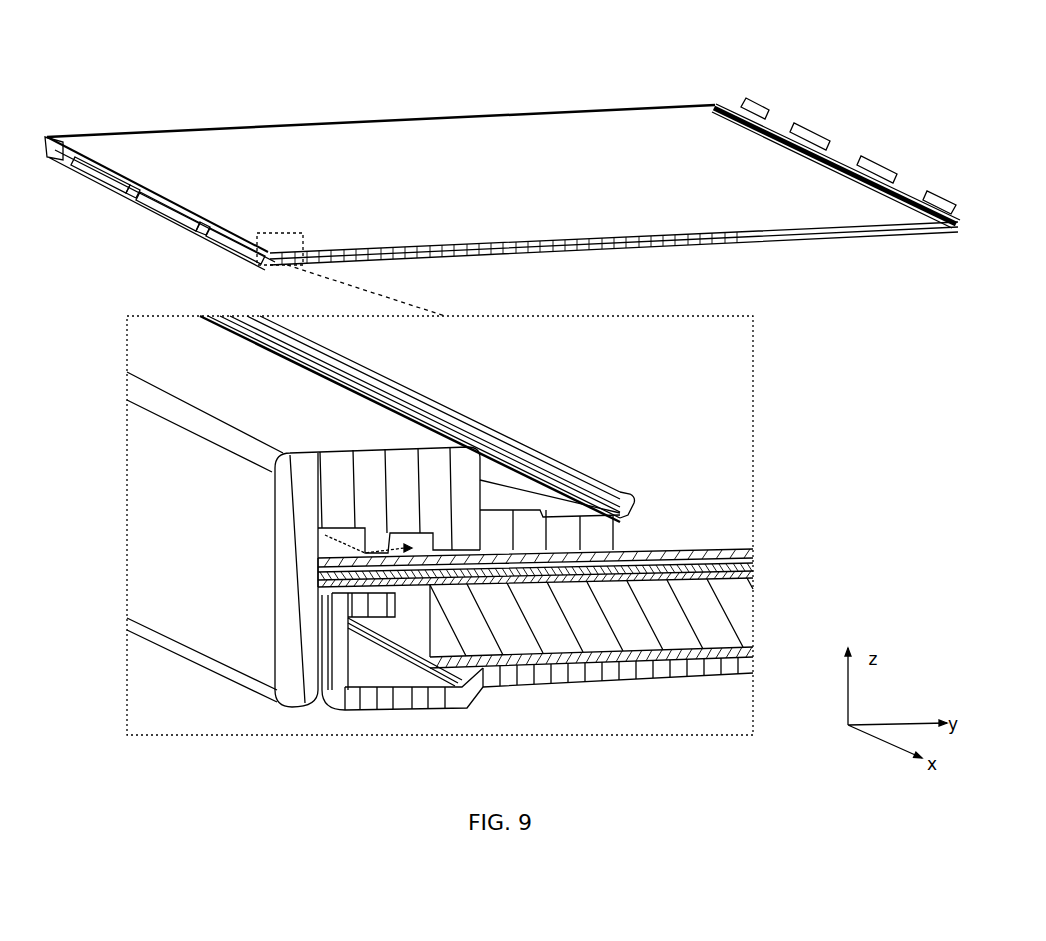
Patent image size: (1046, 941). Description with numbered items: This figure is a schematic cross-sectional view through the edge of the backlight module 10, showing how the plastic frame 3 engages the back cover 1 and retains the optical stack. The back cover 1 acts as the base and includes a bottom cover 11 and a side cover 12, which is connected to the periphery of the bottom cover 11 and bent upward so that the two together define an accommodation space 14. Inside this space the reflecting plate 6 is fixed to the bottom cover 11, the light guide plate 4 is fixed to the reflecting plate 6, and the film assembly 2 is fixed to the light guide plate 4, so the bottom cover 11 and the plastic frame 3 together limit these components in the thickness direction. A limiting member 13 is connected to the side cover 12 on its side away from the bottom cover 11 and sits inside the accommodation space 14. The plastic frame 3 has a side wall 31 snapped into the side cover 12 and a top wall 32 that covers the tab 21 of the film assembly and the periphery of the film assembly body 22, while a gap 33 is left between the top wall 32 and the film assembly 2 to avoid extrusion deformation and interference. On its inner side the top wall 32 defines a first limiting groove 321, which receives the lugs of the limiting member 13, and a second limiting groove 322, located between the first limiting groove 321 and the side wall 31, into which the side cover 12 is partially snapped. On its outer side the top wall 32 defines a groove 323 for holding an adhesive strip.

The back cover 1 is at (388, 715).
The film assembly 2 is at (897, 490).
The plastic frame 3 is at (466, 415).
The light guide plate 4 is at (733, 608).
The reflecting plate 6 is at (750, 648).
The backlight module 10 is at (69, 104).
The bottom cover 11 is at (542, 680).
The side cover 12 is at (338, 678).
The limiting member 13 is at (328, 607).
The accommodation space 14 is at (462, 680).
The tab 21 is at (318, 580).
The film assembly body 22 is at (685, 550).
The side wall 31 is at (237, 665).
The top wall 32 is at (398, 462).
The gap 33 is at (623, 545).
The first limiting groove 321 is at (320, 563).
The second limiting groove 322 is at (325, 535).
The groove 323 is at (567, 498).